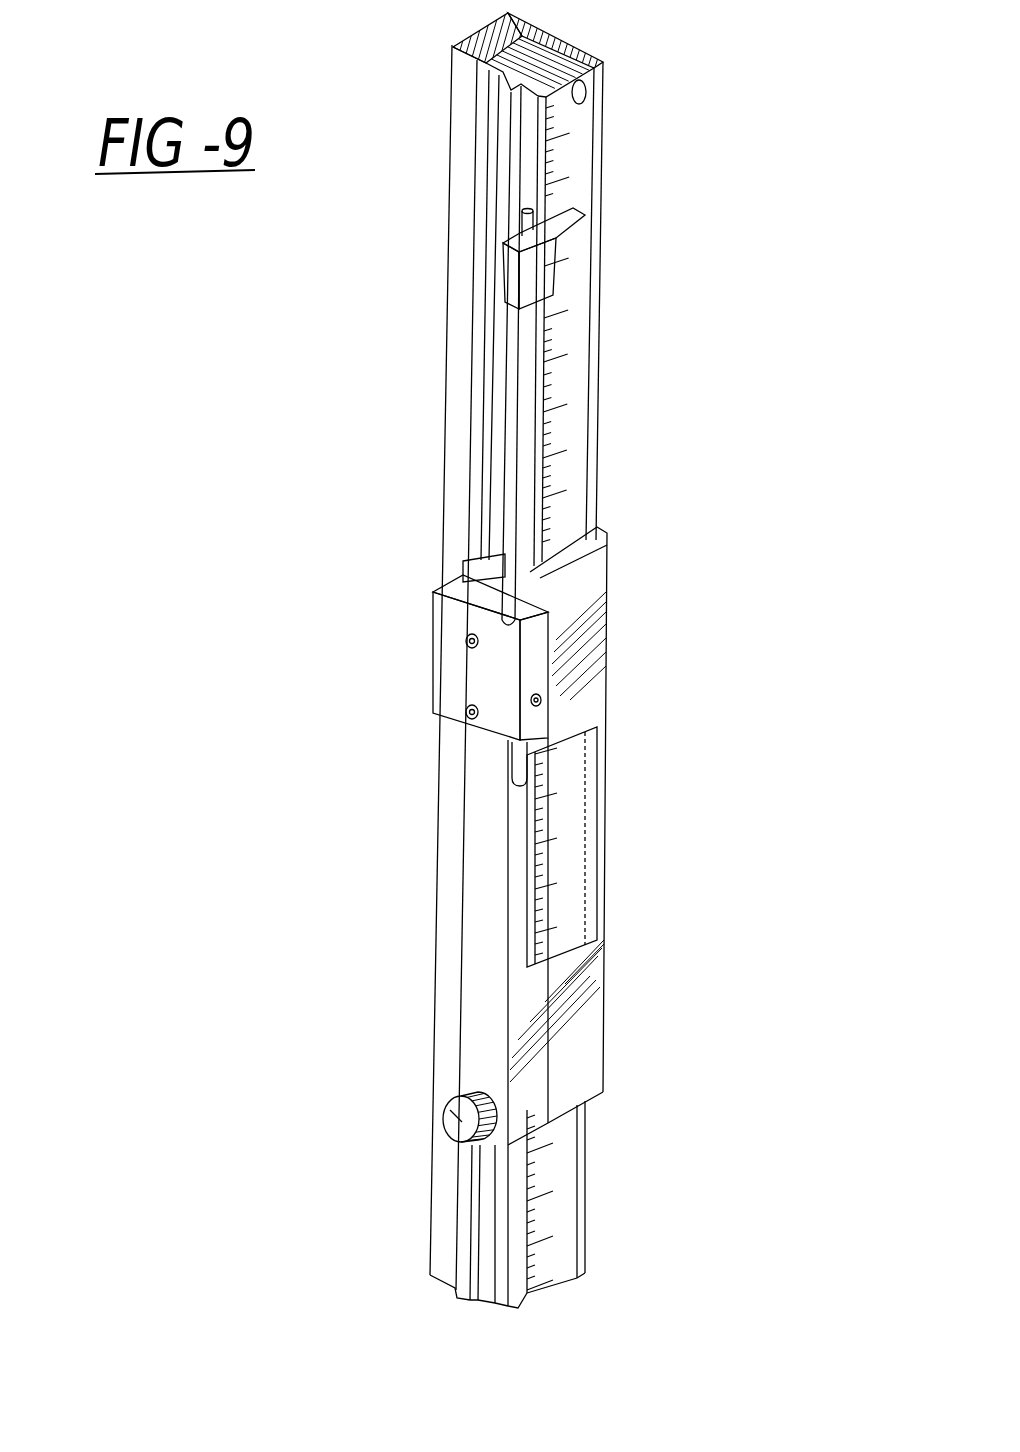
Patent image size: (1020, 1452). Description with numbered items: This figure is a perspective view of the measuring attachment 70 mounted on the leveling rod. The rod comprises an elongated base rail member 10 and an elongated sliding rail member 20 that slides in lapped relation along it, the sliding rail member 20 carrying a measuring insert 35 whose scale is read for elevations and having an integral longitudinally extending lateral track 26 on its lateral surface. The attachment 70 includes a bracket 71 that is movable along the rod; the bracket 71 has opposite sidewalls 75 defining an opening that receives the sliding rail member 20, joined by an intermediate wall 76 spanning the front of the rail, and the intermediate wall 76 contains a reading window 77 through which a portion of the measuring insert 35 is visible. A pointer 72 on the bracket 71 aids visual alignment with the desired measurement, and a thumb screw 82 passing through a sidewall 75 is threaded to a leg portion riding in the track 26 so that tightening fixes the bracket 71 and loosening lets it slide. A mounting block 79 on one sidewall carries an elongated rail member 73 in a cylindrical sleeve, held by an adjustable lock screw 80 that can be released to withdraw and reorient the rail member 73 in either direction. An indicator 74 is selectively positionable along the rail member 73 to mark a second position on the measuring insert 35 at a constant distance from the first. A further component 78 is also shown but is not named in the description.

The base rail member 10 is at (450, 88).
The sliding rail member 20 is at (592, 47).
The lateral track 26 is at (505, 105).
The measuring insert 35 is at (560, 373).
The rail member 73 is at (508, 464).
The indicator 74 is at (588, 220).
The stop bar 78 is at (460, 561).
The mounting block 79 is at (440, 668).
The lock screw 80 is at (541, 697).
The measuring attachment 70 is at (352, 733).
The bracket 71 is at (625, 684).
The sidewalls 75 is at (477, 960).
The intermediate wall 76 is at (570, 1063).
The reading window 77 is at (588, 772).
The pointer 72 is at (556, 858).
The thumb screw 82 is at (448, 1127).